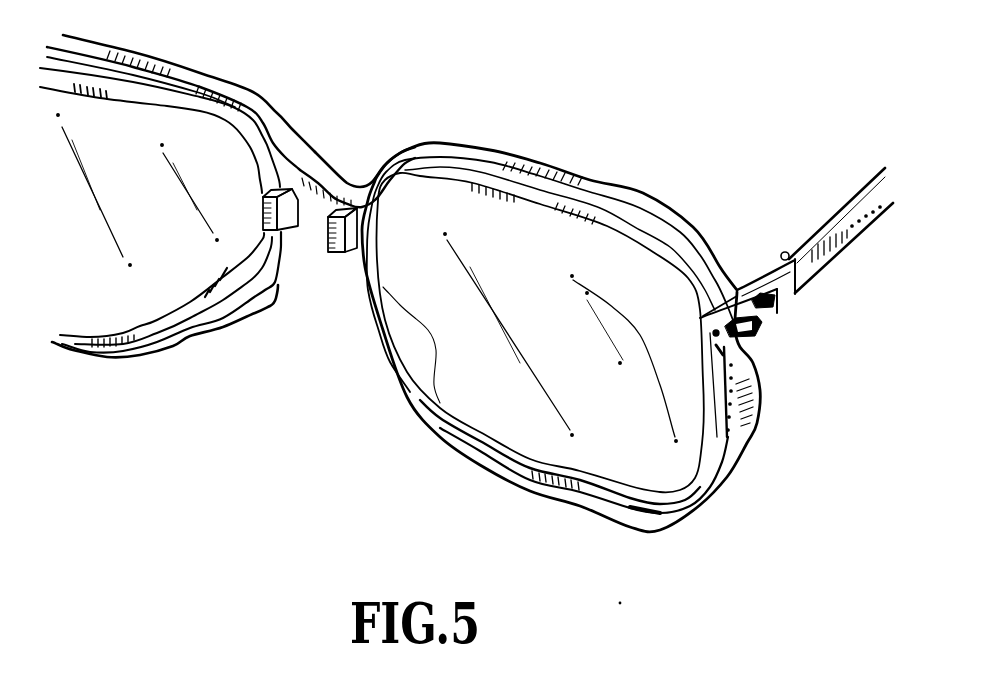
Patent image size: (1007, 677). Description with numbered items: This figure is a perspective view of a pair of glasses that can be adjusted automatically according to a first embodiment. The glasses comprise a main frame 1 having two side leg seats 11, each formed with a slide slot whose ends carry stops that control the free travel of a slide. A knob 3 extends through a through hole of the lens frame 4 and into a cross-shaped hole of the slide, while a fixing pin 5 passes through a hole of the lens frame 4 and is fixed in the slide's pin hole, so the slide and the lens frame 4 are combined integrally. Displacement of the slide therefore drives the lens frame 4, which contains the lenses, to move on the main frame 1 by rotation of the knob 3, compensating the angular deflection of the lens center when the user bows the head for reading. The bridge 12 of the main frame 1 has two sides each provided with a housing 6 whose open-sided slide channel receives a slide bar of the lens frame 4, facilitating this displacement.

The main frame 1 is at (637, 200).
The knob 3 is at (760, 333).
The lens frame 4 is at (780, 317).
The fixing pin 5 is at (760, 397).
The housing 6 is at (273, 217).
The side leg seat 11 is at (754, 287).
The bridge 12 is at (328, 185).